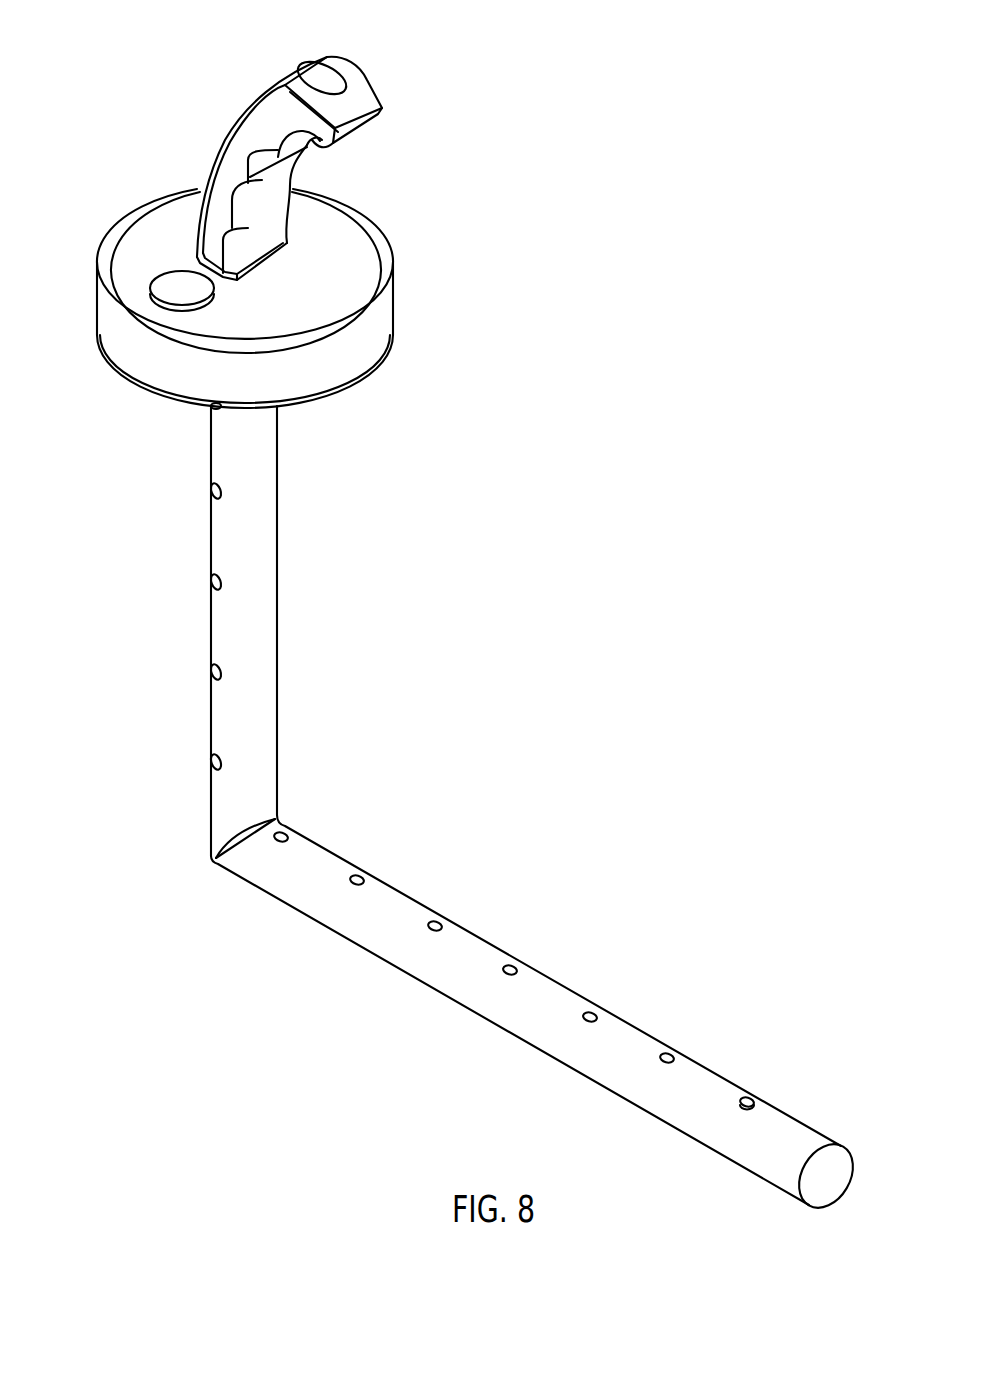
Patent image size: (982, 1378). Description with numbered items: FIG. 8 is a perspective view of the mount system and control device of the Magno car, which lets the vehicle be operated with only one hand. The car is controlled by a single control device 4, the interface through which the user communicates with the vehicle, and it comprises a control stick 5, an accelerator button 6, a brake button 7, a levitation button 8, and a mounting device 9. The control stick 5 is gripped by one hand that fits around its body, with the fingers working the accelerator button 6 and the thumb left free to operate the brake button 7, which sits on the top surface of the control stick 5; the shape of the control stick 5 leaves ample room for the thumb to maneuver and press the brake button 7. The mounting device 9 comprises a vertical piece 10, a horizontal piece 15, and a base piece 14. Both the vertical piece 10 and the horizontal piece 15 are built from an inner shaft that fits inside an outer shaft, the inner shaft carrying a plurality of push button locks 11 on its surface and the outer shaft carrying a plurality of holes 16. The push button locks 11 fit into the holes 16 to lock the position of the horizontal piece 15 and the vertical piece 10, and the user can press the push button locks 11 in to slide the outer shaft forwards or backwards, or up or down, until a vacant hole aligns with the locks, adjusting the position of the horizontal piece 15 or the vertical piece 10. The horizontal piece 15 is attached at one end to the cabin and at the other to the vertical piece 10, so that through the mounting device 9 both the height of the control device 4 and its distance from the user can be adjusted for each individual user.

The control device 4 is at (455, 197).
The control stick 5 is at (258, 135).
The accelerator button 6 is at (312, 140).
The brake button 7 is at (333, 78).
The levitation button 8 is at (178, 278).
The mounting device 9 is at (533, 547).
The vertical piece 10 is at (277, 617).
The push button locks 11 is at (212, 407).
The base piece 14 is at (313, 353).
The horizontal piece 15 is at (323, 925).
The holes 16 is at (212, 497).